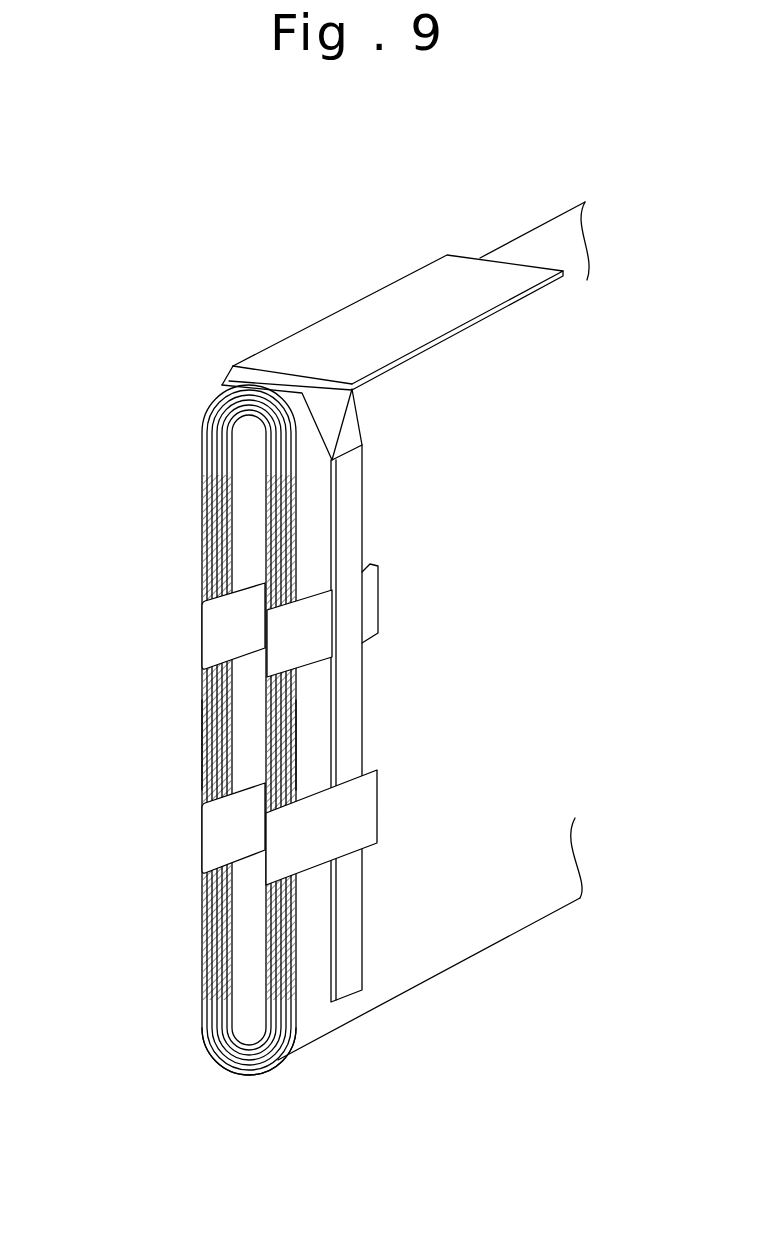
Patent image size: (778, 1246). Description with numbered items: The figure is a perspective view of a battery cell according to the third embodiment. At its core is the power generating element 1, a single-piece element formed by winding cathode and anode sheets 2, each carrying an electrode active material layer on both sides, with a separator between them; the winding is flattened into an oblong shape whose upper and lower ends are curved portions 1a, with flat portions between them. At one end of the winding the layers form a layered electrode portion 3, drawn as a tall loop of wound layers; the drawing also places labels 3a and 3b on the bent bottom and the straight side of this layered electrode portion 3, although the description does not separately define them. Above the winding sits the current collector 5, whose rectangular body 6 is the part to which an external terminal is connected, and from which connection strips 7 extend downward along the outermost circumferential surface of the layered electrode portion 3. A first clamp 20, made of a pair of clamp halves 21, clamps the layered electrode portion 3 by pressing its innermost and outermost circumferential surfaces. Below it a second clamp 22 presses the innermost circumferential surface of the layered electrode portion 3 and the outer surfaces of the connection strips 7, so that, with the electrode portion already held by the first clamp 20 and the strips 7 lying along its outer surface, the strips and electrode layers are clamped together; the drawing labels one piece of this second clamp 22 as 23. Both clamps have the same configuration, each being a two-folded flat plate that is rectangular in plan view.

The power generating element 1 is at (498, 943).
The curved portion 1a is at (255, 388).
The cathode and anode sheets 2 is at (410, 947).
The layered electrode portion 3 is at (215, 465).
The bent portion of coil 3a is at (243, 1073).
The straight portion of coil 3b is at (267, 745).
The current collector 5 is at (411, 280).
The body 6 is at (415, 295).
The connection strip 7 is at (243, 385).
The first clamp 20 is at (284, 616).
The clamp half 21 is at (203, 590).
The second clamp 22 is at (271, 847).
The second tape piece 23 is at (203, 788).